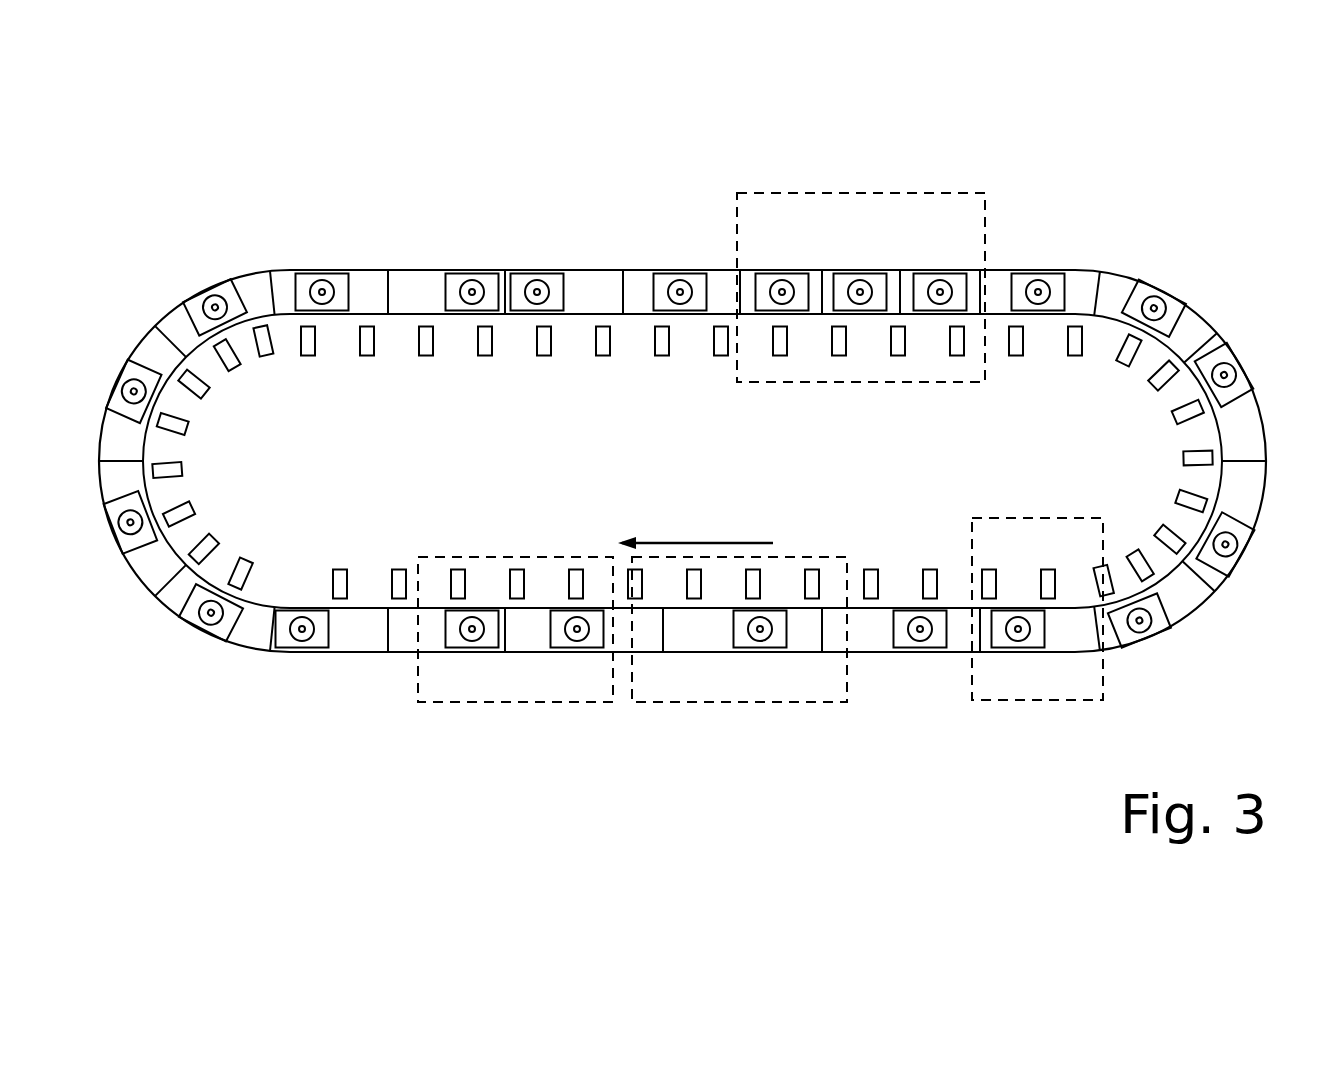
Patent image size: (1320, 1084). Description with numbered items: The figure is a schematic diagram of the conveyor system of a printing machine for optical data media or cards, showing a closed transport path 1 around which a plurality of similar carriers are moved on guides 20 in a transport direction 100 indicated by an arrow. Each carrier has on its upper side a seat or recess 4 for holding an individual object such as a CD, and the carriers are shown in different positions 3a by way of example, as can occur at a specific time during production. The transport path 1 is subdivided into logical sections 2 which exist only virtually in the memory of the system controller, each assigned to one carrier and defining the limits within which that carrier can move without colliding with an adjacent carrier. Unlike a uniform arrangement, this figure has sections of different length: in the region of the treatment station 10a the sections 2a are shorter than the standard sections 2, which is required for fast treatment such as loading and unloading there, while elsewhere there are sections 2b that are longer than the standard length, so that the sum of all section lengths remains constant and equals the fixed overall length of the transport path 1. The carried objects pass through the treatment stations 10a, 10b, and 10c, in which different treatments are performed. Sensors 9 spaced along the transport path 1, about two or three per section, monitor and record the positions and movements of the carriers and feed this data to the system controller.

The transport path 1 is at (403, 280).
The sections 2 is at (722, 290).
The shorter sections 2a is at (820, 285).
The longer sections 2b is at (645, 637).
The carrier positions 3a is at (553, 647).
The seats or recesses 4 is at (914, 641).
The sensors 9 is at (540, 350).
The treatment station 10a is at (788, 223).
The treatment station 10b is at (1045, 687).
The treatment station 10c is at (655, 690).
The guides 20 is at (282, 268).
The transport direction 100 is at (697, 542).